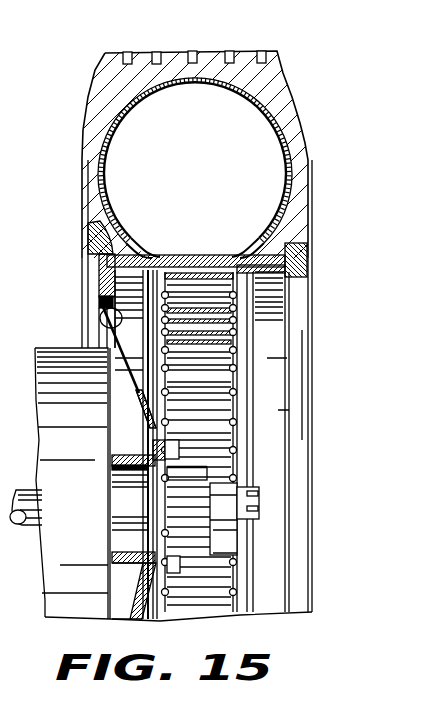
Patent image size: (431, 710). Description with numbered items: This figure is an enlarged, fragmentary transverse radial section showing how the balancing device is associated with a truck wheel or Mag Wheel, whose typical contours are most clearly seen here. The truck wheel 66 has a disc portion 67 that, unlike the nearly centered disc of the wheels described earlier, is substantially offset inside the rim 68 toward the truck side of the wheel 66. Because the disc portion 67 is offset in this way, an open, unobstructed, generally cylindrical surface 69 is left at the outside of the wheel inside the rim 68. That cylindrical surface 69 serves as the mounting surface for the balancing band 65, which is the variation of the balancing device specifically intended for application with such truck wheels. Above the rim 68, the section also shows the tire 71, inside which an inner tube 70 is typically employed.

The balancing band 65 is at (172, 400).
The truck wheel 66 is at (112, 271).
The disc portion 67 is at (99, 321).
The rim 68 is at (190, 256).
The cylindrical surface 69 is at (100, 252).
The inner tube 70 is at (289, 146).
The tire 71 is at (102, 103).